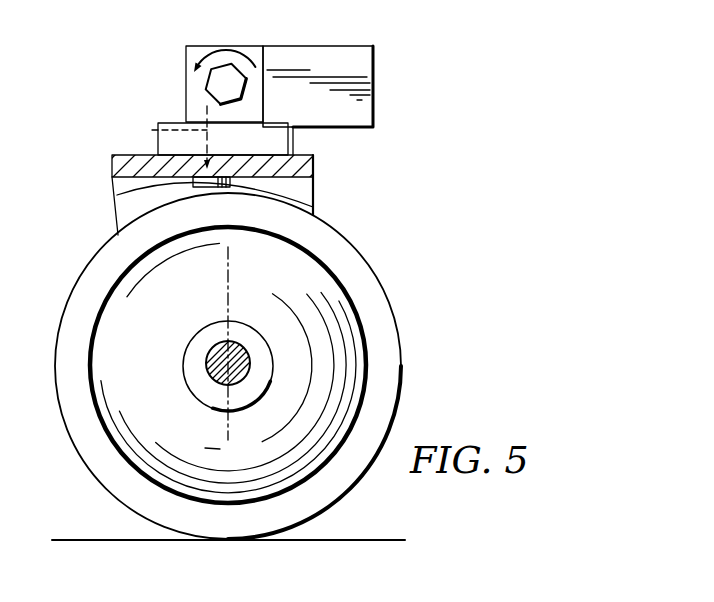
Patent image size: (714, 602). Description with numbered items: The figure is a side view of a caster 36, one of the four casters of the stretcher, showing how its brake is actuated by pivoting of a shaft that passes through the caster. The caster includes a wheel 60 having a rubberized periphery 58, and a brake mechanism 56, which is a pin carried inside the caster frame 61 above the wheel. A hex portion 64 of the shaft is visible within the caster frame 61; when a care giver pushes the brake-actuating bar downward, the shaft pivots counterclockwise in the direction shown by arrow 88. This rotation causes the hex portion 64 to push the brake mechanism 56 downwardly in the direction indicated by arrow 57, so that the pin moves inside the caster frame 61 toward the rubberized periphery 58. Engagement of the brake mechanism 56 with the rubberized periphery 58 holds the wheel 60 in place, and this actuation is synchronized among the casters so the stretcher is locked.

The caster 36 is at (400, 325).
The brake mechanism 56 is at (112, 197).
The arrow 57 is at (152, 130).
The rubberized periphery 58 is at (369, 265).
The wheel 60 is at (158, 307).
The caster frame 61 is at (253, 52).
The hex portion 64 is at (218, 85).
The arrow 88 is at (228, 48).